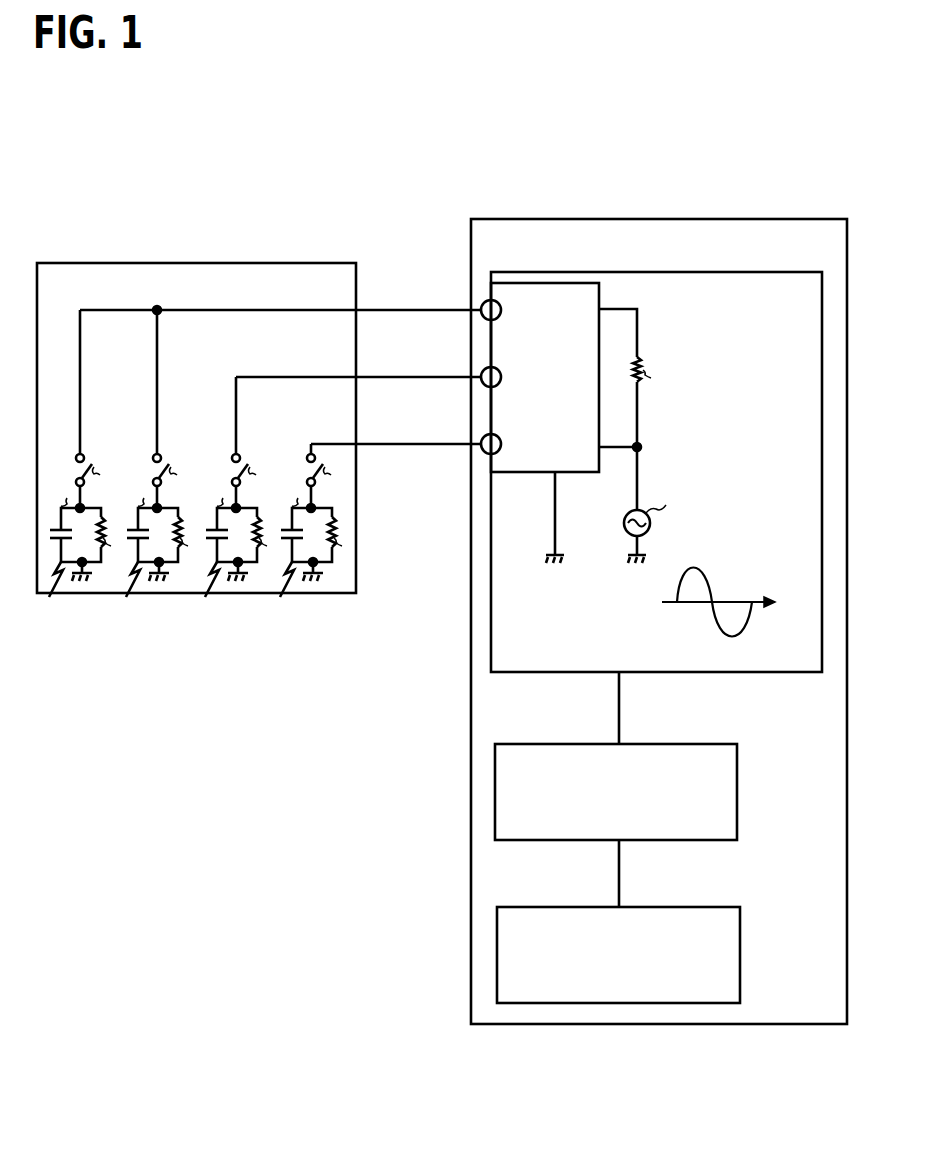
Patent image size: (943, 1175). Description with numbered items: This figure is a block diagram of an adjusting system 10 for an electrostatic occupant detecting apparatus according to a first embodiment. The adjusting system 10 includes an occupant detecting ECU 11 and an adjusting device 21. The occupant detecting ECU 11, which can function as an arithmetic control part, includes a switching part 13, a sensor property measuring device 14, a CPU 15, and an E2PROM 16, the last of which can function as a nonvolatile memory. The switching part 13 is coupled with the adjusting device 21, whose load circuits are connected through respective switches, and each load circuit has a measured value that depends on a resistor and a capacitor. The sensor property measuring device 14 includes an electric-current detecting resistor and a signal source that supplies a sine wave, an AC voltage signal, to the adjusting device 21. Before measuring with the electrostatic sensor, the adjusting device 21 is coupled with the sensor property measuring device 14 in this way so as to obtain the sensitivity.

The adjusting system 10 is at (410, 190).
The occupant detecting ECU 11 is at (528, 219).
The switching part 13 is at (518, 473).
The sensor property measuring device 14 is at (713, 272).
The CPU 15 is at (738, 788).
The E2PROM 16 is at (740, 953).
The adjusting device 21 is at (45, 263).